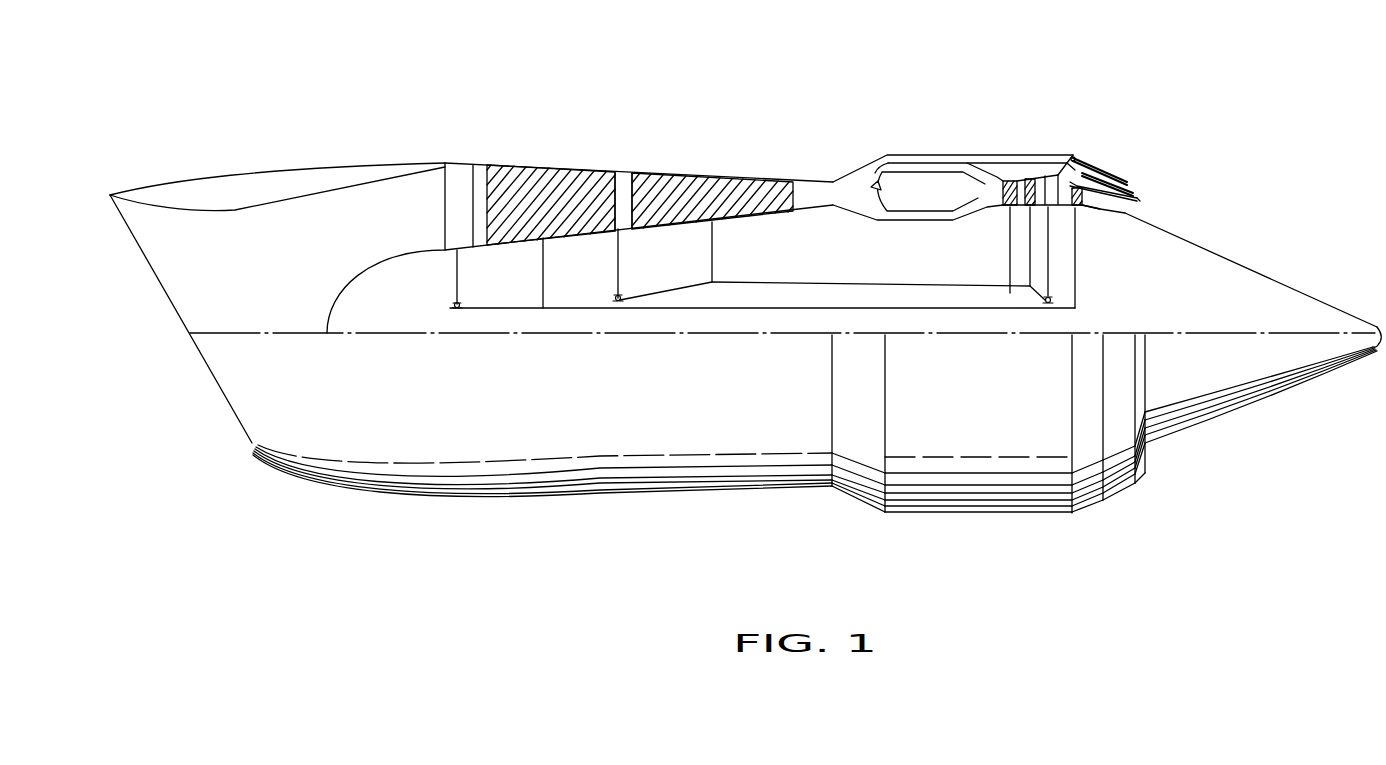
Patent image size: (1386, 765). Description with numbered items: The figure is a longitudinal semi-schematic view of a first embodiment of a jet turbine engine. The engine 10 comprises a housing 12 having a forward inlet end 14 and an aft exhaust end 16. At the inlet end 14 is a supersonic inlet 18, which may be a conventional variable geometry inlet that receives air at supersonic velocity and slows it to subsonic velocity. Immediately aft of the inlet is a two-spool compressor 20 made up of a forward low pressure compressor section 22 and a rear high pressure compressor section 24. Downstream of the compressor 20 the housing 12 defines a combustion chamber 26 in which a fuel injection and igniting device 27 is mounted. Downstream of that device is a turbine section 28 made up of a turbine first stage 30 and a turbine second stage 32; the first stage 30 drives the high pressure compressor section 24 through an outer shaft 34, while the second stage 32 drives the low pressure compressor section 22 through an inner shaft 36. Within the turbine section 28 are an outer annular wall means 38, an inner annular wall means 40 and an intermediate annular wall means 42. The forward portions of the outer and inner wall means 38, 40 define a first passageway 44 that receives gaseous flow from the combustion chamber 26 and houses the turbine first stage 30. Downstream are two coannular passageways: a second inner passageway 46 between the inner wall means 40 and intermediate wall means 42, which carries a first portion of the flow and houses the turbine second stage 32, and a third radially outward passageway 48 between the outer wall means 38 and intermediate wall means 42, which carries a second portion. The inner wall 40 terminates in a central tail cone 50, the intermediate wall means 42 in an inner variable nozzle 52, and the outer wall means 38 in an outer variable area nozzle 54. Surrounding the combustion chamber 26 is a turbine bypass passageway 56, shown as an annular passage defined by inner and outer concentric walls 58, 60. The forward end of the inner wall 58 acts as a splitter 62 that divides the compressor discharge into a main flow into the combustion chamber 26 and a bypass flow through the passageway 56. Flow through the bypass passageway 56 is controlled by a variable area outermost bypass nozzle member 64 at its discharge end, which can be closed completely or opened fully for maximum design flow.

The engine 10 is at (756, 133).
The housing 12 is at (815, 160).
The forward inlet end 14 is at (382, 145).
The aft exhaust end 16 is at (1244, 236).
The supersonic inlet 18 is at (189, 224).
The compressor 20 is at (620, 133).
The low pressure compressor section 22 is at (615, 160).
The high pressure compressor section 24 is at (795, 170).
The combustion chamber 26 is at (907, 195).
The fuel injection and igniting device 27 is at (869, 192).
The turbine section 28 is at (1104, 224).
The turbine first stage 30 is at (1012, 180).
The turbine second stage 32 is at (1100, 209).
The outer shaft 34 is at (935, 300).
The inner shaft 36 is at (783, 313).
The outer annular wall means 38 is at (1048, 180).
The inner annular wall means 40 is at (1047, 212).
The intermediate annular wall means 42 is at (1093, 180).
The first passageway 44 is at (999, 207).
The second inner passageway 46 is at (1068, 212).
The third radially outward passageway 48 is at (1075, 163).
The central tail cone 50 is at (1313, 307).
The inner variable nozzle 52 is at (1140, 193).
The outer variable area nozzle 54 is at (1128, 187).
The turbine bypass passageway 56 is at (910, 156).
The inner concentric wall 58 is at (995, 168).
The outer concentric wall 60 is at (953, 158).
The splitter 62 is at (880, 168).
The variable area outermost bypass nozzle member 64 is at (1087, 160).